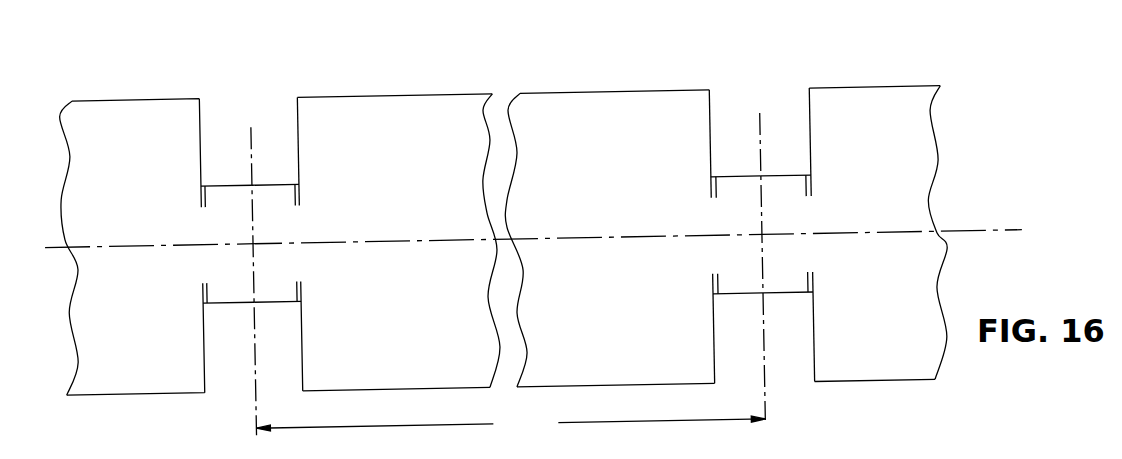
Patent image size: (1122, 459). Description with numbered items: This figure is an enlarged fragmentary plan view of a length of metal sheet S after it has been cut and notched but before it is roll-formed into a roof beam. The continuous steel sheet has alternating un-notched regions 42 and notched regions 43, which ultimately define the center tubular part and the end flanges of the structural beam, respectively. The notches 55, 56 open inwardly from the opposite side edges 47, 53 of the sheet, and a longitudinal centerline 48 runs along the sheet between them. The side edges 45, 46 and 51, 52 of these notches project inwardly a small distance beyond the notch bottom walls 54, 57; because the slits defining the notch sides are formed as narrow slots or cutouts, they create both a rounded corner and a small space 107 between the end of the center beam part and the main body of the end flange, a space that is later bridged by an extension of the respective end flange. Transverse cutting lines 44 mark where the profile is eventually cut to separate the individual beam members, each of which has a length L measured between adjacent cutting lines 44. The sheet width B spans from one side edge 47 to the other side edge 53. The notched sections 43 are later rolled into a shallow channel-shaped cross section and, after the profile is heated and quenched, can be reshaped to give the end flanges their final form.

The un-notched region 42 is at (417, 117).
The side edge 47 is at (623, 90).
The notched region 43 is at (268, 176).
The cutting line 44 is at (253, 127).
The notch side edge 45 is at (815, 153).
The notch side edge 46 is at (712, 153).
The longitudinal axis / centerline (48') 48 is at (455, 242).
The notch side edge 51 is at (812, 311).
The notch side edge 52 is at (712, 336).
The side edge 53 is at (405, 390).
The notch bottom wall 54 is at (287, 196).
The notch 55 is at (222, 160).
The notch 56 is at (237, 338).
The notch bottom wall 57 is at (273, 305).
The space 107 is at (713, 193).
The pipe joint assembly (S') S is at (545, 76).
The length L is at (510, 426).
The reference B' B is at (545, 457).